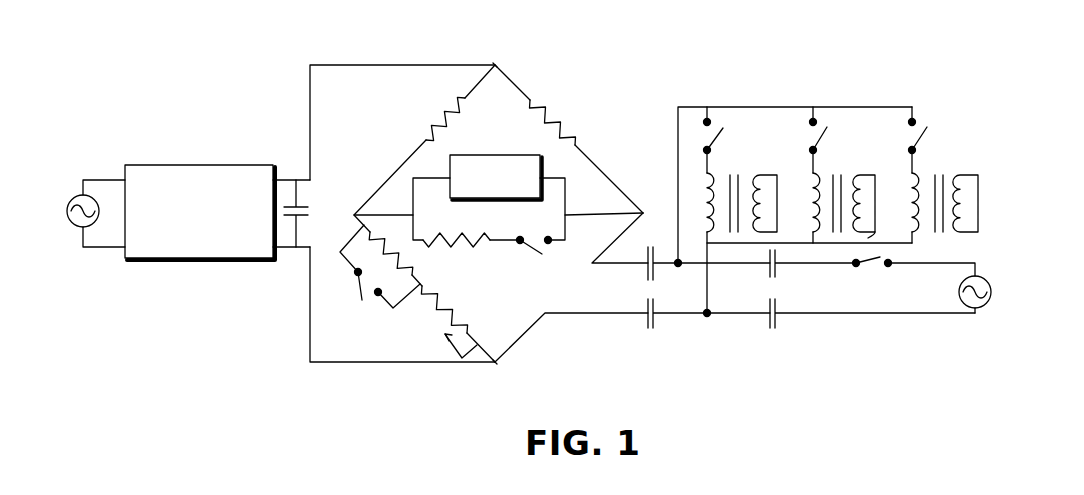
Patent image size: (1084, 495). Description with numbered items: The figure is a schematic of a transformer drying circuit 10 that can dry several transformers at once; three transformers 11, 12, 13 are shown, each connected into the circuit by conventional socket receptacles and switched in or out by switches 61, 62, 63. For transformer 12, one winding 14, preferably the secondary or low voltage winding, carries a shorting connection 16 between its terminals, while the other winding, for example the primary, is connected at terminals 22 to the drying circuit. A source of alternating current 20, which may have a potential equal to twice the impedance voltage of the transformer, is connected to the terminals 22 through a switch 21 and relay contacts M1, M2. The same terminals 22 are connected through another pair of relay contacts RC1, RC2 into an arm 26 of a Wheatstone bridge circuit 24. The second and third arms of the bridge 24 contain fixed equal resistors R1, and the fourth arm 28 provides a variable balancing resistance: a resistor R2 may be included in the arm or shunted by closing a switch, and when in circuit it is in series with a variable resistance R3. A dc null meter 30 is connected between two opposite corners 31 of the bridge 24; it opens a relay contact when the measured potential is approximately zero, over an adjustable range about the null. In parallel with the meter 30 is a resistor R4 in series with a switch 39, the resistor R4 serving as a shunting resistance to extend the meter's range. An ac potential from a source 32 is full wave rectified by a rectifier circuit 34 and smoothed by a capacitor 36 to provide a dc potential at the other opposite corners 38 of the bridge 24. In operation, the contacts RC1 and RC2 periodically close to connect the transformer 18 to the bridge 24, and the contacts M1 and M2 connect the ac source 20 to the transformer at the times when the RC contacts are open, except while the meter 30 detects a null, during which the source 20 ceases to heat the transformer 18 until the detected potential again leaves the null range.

The transformer drying circuit 10 is at (753, 345).
The transformer 11 is at (749, 210).
The transformer 12 is at (845, 175).
The transformer 13 is at (927, 175).
The winding 14 is at (868, 238).
The shorting connection 16 is at (875, 198).
The transformer 18 is at (816, 236).
The source of alternating current 20 is at (959, 292).
The switch 21 is at (861, 265).
The terminals 22 is at (680, 265).
The Wheatstone bridge circuit 24 is at (486, 222).
The arm 26 is at (527, 333).
The fourth arm 28 is at (419, 292).
The dc null meter 30 is at (487, 199).
The opposite corners 31 is at (354, 216).
The source 32 is at (83, 195).
The rectifier circuit 34 is at (184, 165).
The capacitor 36 is at (300, 208).
The opposite corners 38 is at (495, 65).
The switch 39 is at (542, 255).
The switch 61 is at (716, 136).
The switch 62 is at (820, 129).
The switch 63 is at (920, 135).
The fixed equal resistors R1 is at (501, 121).
The resistor R2 is at (403, 253).
The variable resistance R3 is at (452, 322).
The resistor R4 is at (456, 229).
The relay contact RC1 is at (691, 262).
The relay contact RC2 is at (686, 312).
The relay contact M1 is at (813, 268).
The relay contact M2 is at (872, 312).